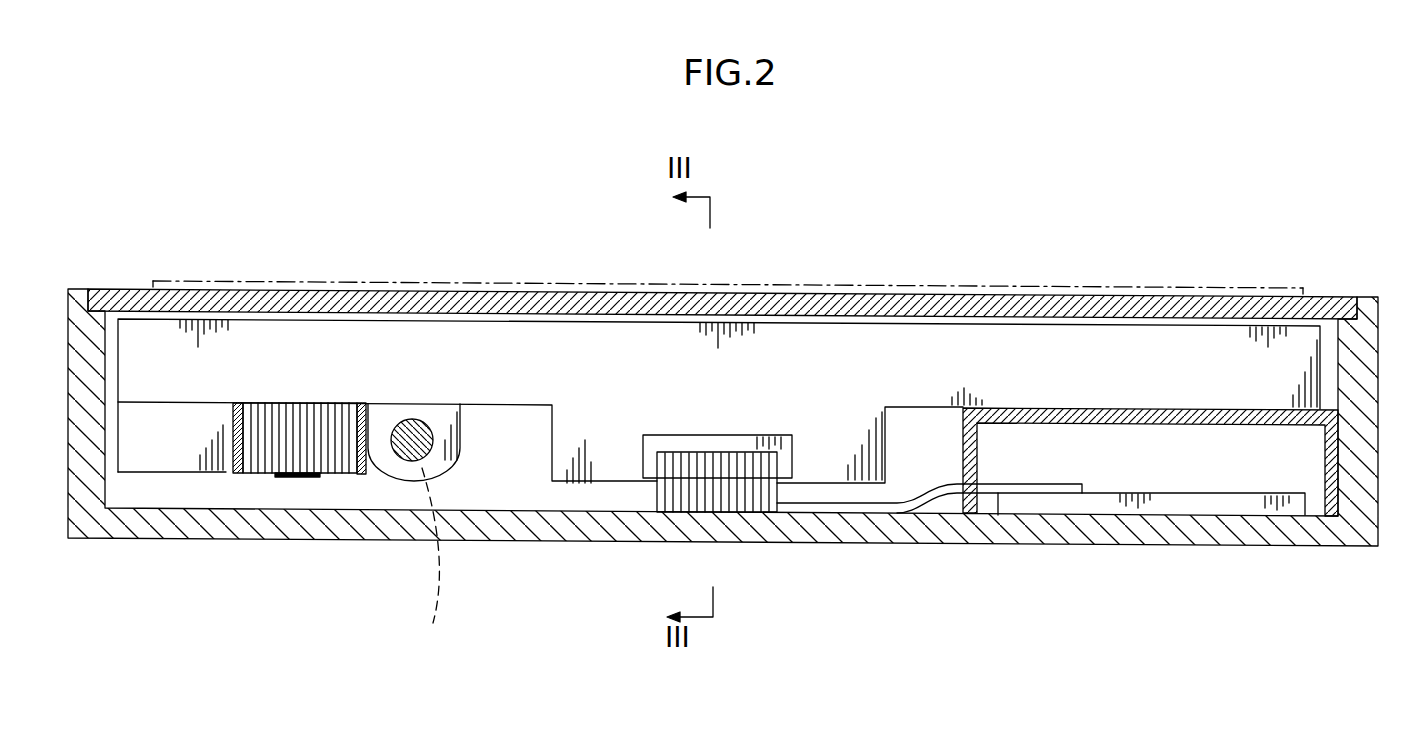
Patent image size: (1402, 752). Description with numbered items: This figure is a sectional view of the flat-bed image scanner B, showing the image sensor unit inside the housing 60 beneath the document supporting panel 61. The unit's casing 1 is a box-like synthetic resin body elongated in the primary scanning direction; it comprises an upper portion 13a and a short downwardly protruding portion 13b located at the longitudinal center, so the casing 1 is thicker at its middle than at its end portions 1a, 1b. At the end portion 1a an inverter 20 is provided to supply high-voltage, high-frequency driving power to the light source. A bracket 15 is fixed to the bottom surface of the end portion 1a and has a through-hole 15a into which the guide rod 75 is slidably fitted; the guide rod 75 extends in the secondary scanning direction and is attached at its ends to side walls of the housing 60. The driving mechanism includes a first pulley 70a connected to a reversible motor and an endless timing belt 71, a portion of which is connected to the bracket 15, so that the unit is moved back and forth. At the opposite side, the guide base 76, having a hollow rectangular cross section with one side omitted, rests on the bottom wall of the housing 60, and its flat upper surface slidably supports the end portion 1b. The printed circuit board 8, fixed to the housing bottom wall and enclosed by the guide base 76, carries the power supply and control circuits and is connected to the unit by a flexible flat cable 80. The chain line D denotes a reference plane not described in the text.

The casing 1 is at (841, 338).
The end portion of the casing 1a is at (152, 353).
The end portion of the casing 1b is at (1262, 365).
The upper portion 13a is at (923, 345).
The downwardly protruding portion 13b is at (610, 462).
The inverter 20 is at (172, 452).
The endless timing belt 71 is at (361, 476).
The first pulley 70a is at (303, 415).
The guide rod 75 is at (407, 459).
The bracket 15 is at (433, 463).
The through-hole 15a is at (448, 562).
The flexible flat cable 80 is at (763, 487).
The printed circuit board 8 is at (1095, 505).
The guide base 76 is at (1170, 411).
The housing 60 is at (1355, 353).
The document supporting panel 61 is at (1323, 318).
The disc reference plane D is at (1062, 287).
The image scanner B is at (1270, 184).